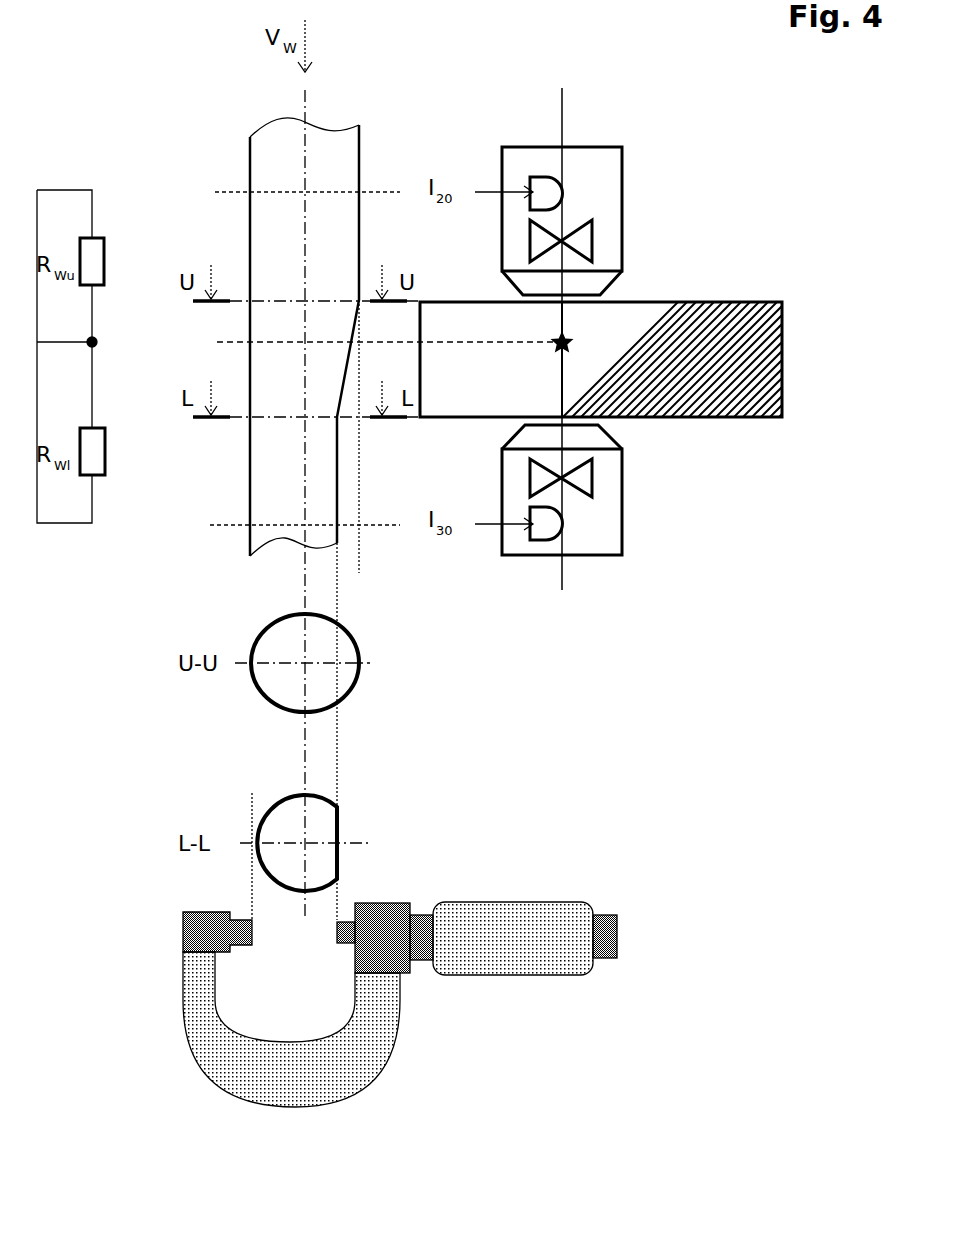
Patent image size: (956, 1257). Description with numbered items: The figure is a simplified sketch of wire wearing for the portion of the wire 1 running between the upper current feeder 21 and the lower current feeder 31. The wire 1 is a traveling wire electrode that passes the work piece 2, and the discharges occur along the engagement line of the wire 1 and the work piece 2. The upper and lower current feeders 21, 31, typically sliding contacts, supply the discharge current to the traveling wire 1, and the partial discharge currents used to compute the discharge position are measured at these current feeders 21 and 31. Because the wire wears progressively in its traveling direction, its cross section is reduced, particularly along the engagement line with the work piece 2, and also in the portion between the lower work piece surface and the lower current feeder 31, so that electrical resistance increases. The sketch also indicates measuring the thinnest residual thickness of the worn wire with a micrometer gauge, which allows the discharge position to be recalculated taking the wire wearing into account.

The wire 1 is at (260, 145).
The work piece 2 is at (715, 388).
The upper current feeder 21 is at (538, 175).
The lower current feeder 31 is at (545, 530).